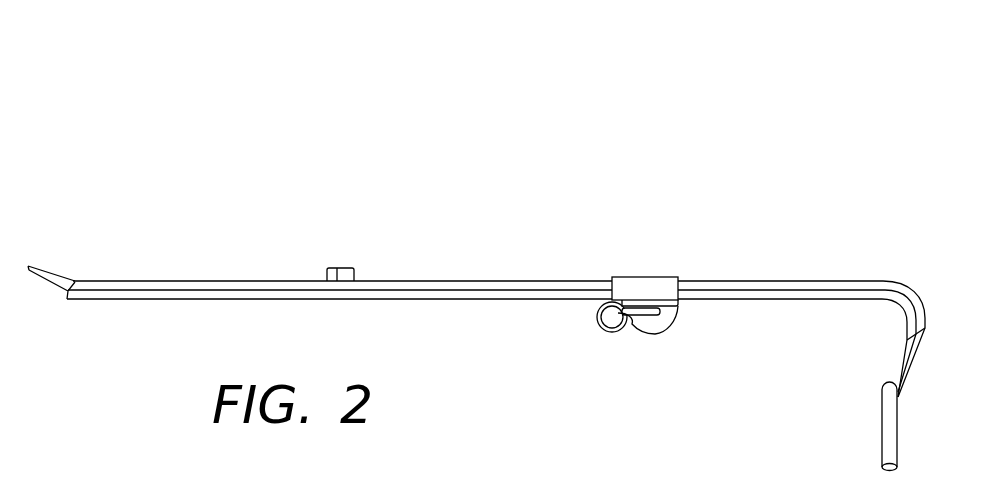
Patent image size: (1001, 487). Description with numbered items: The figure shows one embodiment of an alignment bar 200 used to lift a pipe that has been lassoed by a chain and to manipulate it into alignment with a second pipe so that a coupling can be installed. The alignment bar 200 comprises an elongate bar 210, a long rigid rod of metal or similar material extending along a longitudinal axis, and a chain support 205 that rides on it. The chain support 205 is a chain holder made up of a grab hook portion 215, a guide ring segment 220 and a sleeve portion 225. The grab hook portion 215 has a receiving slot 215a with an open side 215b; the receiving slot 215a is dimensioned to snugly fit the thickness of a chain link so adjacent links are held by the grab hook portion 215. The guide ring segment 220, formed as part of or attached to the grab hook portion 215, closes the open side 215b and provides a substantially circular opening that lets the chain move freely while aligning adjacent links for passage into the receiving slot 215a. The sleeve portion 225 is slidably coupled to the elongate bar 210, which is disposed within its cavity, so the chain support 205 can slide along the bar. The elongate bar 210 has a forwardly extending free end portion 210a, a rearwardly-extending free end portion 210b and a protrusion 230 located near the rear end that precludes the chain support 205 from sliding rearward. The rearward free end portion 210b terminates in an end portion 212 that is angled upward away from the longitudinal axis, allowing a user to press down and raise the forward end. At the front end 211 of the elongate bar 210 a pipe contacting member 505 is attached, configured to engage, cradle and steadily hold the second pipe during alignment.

The alignment bar 200 is at (435, 176).
The chain support 205 is at (610, 277).
The elongate bar 210 is at (202, 280).
The forwardly extending free end portion 210a is at (908, 275).
The rearwardly-extending free end portion 210b is at (87, 275).
The front end 211 is at (902, 375).
The end portion 212 is at (45, 278).
The grab hook portion 215 is at (657, 332).
The receiving slot 215a is at (677, 310).
The open side 215b is at (618, 333).
The guide ring segment 220 is at (598, 325).
The sleeve portion 225 is at (638, 290).
The protrusion 230 is at (337, 268).
The pipe contacting member 505 is at (883, 427).